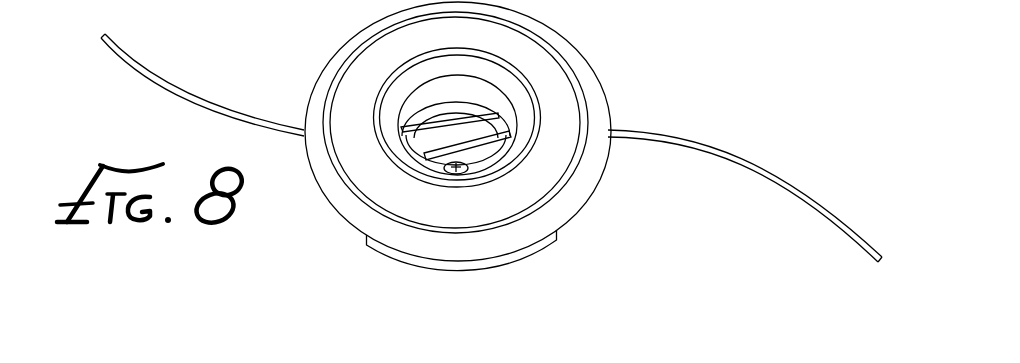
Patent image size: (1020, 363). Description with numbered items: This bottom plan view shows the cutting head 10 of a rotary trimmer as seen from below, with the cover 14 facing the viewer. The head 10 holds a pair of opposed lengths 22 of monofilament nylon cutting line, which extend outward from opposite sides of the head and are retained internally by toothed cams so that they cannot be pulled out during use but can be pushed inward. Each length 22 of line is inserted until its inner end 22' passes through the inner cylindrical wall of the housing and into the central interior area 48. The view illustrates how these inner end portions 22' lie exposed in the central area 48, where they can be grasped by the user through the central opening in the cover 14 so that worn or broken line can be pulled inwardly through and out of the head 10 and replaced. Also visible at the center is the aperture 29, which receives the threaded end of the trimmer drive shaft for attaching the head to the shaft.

The head 10 is at (592, 61).
The cover 14 is at (547, 28).
The lengths of cutting line 22 is at (491, 148).
The inner end portions of the lengths of line 22' is at (422, 157).
The aperture 29 is at (456, 171).
The central interior area 48 is at (454, 116).